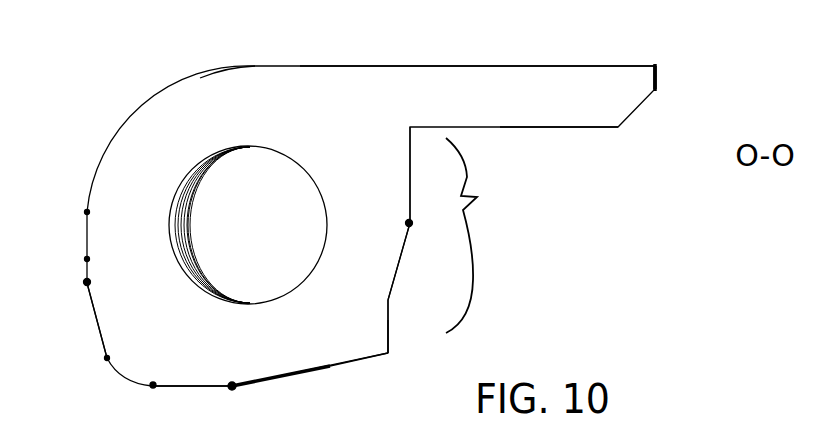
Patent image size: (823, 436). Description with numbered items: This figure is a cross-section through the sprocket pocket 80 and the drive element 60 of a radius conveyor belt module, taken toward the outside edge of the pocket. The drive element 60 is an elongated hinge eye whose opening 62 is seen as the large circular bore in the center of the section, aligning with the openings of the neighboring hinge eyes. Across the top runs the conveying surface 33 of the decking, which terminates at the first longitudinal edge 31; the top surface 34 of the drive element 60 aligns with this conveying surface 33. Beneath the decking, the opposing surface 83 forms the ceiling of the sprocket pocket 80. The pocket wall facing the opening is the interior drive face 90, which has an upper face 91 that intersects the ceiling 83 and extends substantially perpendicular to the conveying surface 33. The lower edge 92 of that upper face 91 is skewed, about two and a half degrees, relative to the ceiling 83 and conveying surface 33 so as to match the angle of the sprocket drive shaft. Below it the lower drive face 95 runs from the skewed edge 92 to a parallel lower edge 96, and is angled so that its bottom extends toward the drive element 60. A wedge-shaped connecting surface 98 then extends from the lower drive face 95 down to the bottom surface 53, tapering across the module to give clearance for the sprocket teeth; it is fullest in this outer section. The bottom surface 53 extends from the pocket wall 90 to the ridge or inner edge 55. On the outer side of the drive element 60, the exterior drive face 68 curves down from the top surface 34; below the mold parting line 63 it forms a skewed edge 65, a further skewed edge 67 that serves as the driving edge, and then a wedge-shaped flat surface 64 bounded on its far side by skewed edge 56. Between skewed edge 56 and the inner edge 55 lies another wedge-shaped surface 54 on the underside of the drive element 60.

The exterior drive face 68 is at (123, 125).
The opening 62 is at (220, 235).
The drive element 60 is at (215, 137).
The top surface 34 is at (253, 67).
The conveying surface 33 is at (494, 58).
The first longitudinal edge 31 is at (660, 78).
The ceiling 83 is at (553, 128).
The upper face 91 is at (409, 172).
The lower edge 92 is at (409, 223).
The lower drive face 95 is at (402, 268).
The lower edge 96 is at (388, 302).
The connecting surface 98 is at (388, 330).
The interior drive face 90 is at (488, 235).
The sprocket pocket 80 is at (563, 262).
The mold parting line 63 is at (87, 212).
The skewed edge 65 is at (86, 258).
The skewed edge 67 is at (85, 283).
The flat surface 64 is at (100, 333).
The skewed edge 56 is at (152, 389).
The wedge-shaped surface 54 is at (181, 387).
The inner edge 55 is at (232, 386).
The bottom surface 53 is at (310, 368).